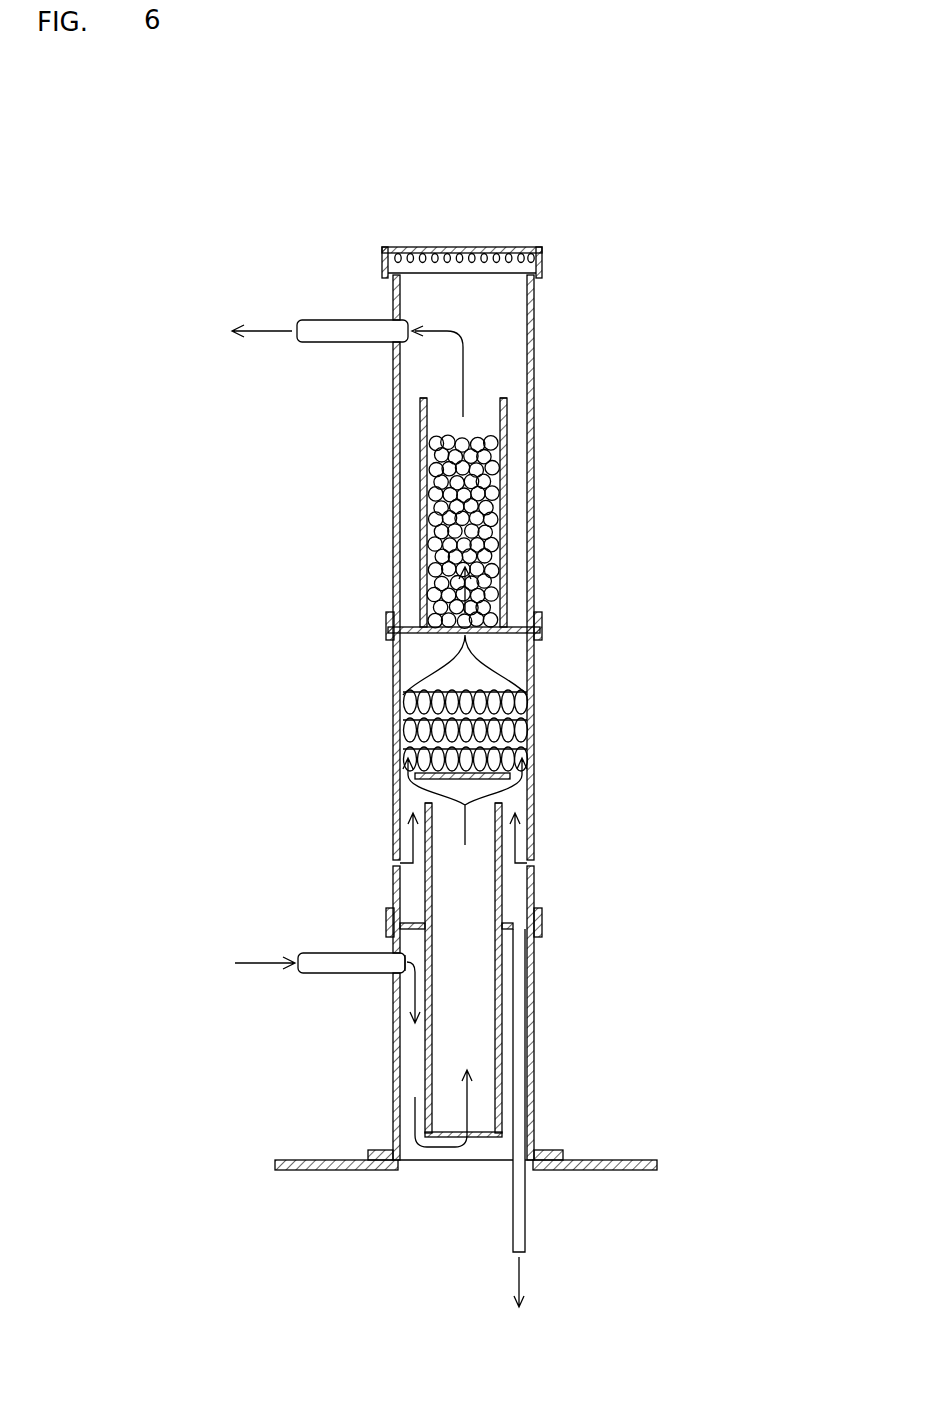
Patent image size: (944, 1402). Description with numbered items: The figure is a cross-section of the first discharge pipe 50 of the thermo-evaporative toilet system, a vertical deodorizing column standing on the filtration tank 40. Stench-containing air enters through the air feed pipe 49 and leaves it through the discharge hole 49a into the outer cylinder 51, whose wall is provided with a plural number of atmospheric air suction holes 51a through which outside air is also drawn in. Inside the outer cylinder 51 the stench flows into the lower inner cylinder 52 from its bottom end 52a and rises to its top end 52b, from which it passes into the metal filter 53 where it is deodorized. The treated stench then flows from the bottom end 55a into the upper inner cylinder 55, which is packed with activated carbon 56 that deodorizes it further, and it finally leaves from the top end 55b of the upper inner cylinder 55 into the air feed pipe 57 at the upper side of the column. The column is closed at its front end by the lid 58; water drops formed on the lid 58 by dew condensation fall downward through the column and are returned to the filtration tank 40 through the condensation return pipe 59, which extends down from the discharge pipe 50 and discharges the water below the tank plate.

The filtration tank 40 is at (633, 1228).
The air feed pipe 49 is at (333, 955).
The discharge hole 49a is at (393, 972).
The first discharge pipe 50 is at (632, 338).
The outer cylinder 51 is at (392, 503).
The air suction holes 51a is at (393, 863).
The lower inner cylinder 52 is at (505, 888).
The bottom end 52a is at (500, 1120).
The top end 52b is at (503, 805).
The metal filter 53 is at (520, 733).
The upper inner cylinder 55 is at (508, 525).
The bottom end 55a is at (515, 610).
The top end 55b is at (508, 418).
The activated carbon 56 is at (503, 485).
The air feed pipe 57 is at (323, 320).
The lid 58 is at (497, 247).
The condensation return pipe 59 is at (515, 1215).